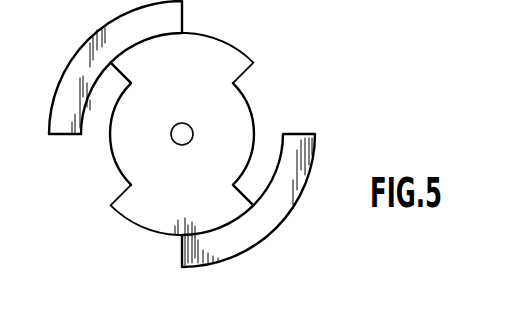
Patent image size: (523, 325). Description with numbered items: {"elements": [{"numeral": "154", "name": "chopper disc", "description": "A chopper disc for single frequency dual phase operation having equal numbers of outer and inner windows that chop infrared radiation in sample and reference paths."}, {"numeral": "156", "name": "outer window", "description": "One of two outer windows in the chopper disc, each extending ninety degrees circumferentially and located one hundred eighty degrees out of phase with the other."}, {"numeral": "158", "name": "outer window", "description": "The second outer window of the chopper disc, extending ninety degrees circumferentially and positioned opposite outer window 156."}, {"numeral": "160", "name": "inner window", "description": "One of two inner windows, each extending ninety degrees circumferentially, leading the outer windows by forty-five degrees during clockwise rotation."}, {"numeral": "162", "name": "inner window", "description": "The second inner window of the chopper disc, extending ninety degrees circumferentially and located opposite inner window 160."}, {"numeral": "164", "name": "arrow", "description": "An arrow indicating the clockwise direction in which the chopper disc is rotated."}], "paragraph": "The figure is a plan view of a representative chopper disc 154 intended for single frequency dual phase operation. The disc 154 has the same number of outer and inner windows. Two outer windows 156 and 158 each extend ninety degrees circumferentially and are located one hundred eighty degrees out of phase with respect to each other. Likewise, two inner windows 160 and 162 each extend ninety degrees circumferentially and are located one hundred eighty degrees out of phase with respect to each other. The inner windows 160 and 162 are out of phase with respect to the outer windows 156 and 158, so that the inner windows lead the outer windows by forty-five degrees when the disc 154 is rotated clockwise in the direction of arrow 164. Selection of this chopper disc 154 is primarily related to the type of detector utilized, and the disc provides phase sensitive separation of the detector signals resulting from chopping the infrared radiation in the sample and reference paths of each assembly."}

The arcuate arm segment 154 is at (285, 215).
The tooth 156 is at (158, 245).
The tooth 158 is at (218, 33).
The slot 160 is at (112, 183).
The slot 162 is at (267, 140).
The arcuate arm segment 164 is at (138, 29).